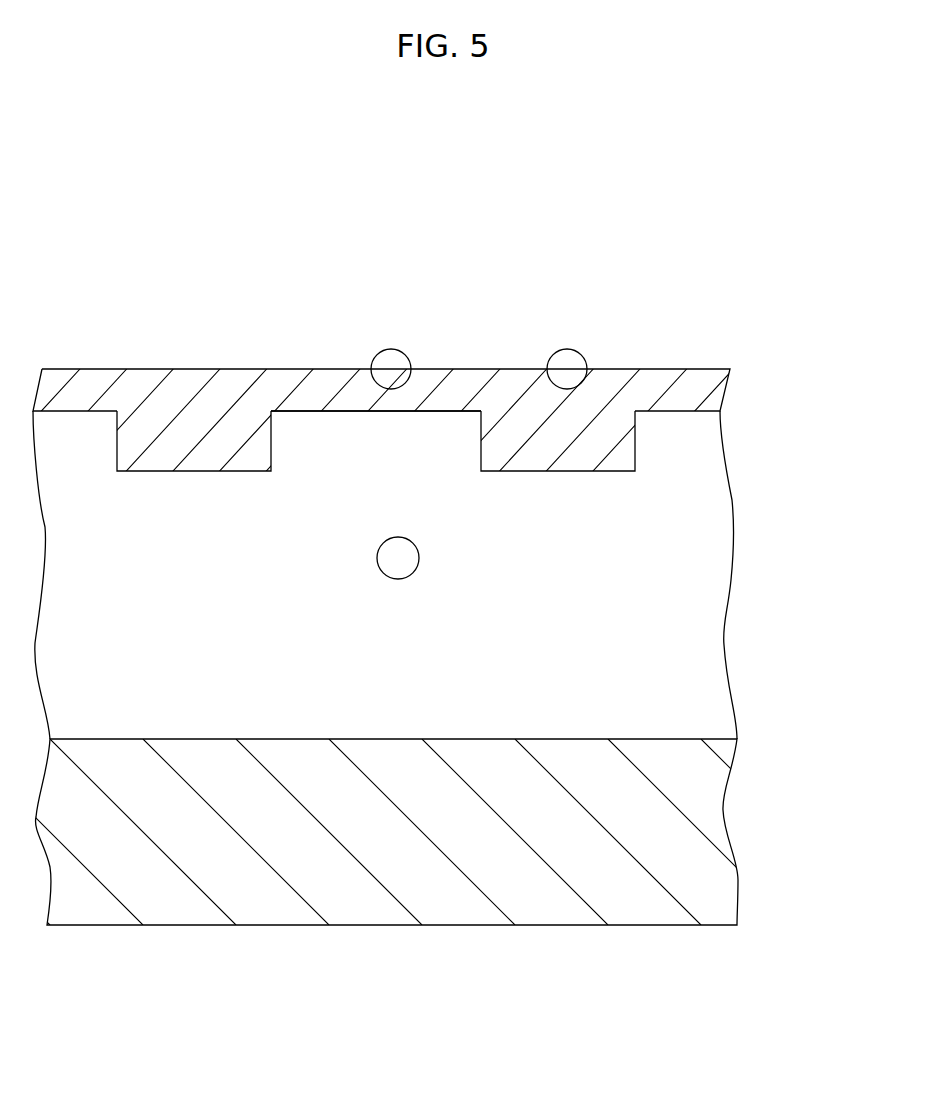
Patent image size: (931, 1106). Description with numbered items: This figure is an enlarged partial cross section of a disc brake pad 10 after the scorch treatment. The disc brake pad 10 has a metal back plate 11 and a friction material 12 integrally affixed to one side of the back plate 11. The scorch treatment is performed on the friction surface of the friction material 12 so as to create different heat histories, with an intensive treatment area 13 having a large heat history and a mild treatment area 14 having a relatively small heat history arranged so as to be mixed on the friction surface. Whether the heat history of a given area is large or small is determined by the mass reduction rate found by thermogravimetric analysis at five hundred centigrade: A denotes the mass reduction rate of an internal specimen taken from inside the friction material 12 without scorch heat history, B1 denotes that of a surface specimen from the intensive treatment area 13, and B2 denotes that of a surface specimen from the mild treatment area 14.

The disc brake pad 10 is at (725, 367).
The metal back plate 11 is at (730, 845).
The friction material 12 is at (725, 633).
The intensive treatment area 13 is at (117, 338).
The mild treatment area 14 is at (277, 340).
The internal specimen mass reduction rate A is at (421, 567).
The intensive treatment area mass reduction rate B1 is at (380, 386).
The mild treatment area mass reduction rate B2 is at (566, 389).